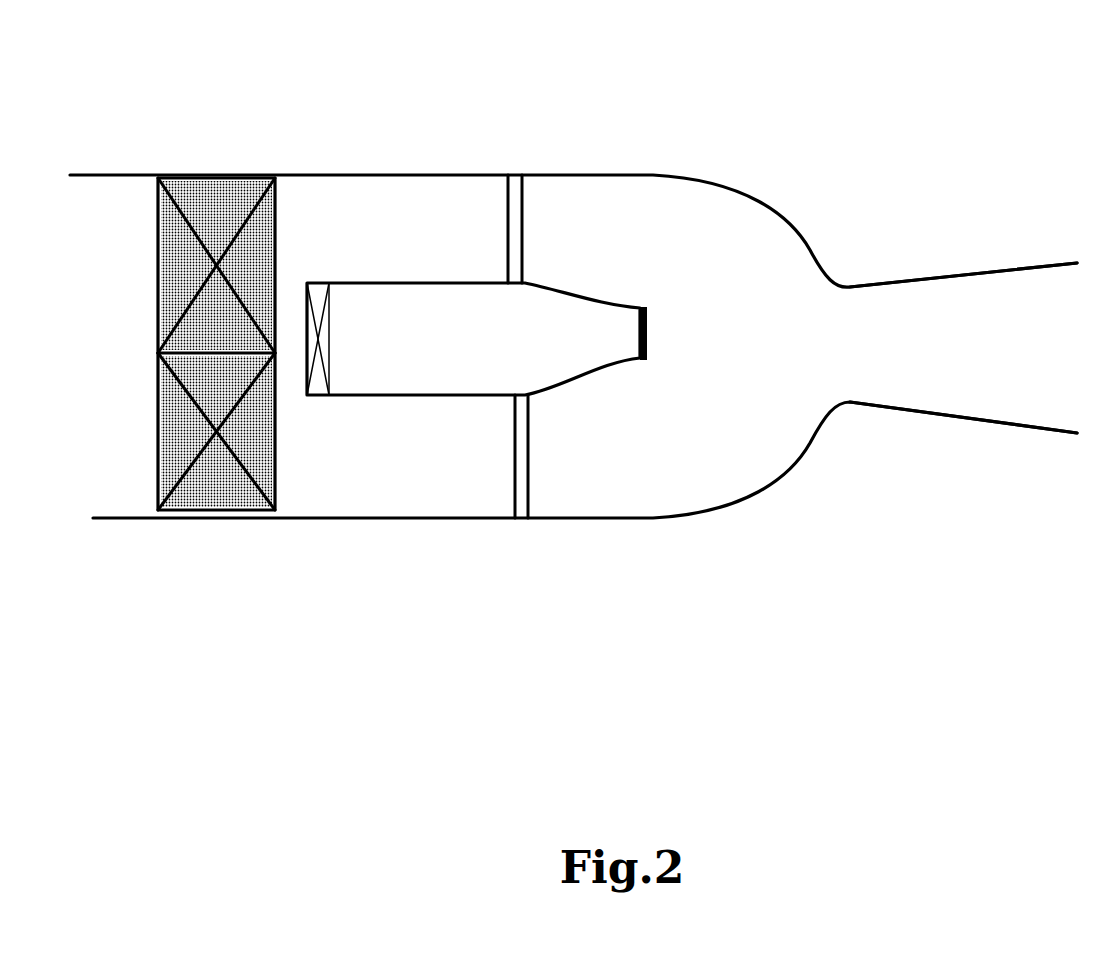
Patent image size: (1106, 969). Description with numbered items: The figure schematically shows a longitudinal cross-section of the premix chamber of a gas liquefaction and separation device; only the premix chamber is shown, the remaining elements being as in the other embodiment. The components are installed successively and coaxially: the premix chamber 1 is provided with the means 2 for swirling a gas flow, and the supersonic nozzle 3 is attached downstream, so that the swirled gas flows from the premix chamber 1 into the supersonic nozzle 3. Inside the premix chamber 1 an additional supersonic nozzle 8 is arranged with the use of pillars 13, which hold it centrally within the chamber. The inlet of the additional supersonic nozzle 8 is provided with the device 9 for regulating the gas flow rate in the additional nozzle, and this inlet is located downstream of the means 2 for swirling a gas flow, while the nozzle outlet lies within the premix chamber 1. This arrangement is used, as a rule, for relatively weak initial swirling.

The premix chamber 1 is at (93, 238).
The means for swirling a gas flow 2 is at (228, 442).
The supersonic nozzle 3 is at (927, 332).
The additional supersonic nozzle 8 is at (415, 328).
The device for regulating gas flow rate 9 is at (313, 315).
The pillars 13 is at (527, 458).